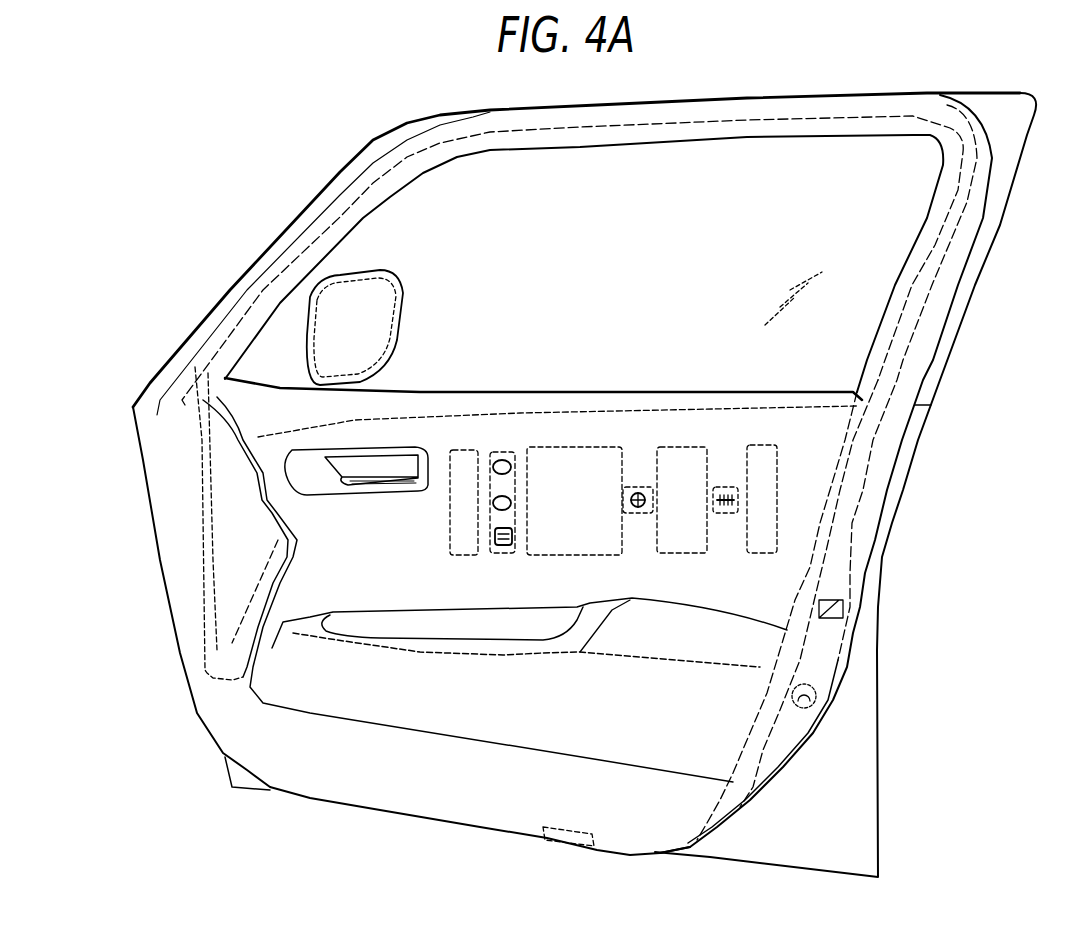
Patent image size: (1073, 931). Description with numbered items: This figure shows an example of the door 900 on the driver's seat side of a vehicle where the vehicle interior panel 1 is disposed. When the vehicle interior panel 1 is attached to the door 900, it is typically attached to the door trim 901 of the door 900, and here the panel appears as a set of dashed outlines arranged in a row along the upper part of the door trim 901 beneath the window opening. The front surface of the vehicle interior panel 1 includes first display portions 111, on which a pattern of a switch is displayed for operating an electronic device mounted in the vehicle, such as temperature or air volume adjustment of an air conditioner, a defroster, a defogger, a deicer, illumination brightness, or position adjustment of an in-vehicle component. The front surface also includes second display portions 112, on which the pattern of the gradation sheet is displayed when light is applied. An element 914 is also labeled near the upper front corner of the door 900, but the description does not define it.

The vehicle interior panel 1 is at (633, 427).
The first display portion 111 is at (500, 450).
The second display portion 112 is at (463, 447).
The door 900 is at (838, 808).
The door trim 901 is at (773, 575).
The speaker 914 is at (378, 322).